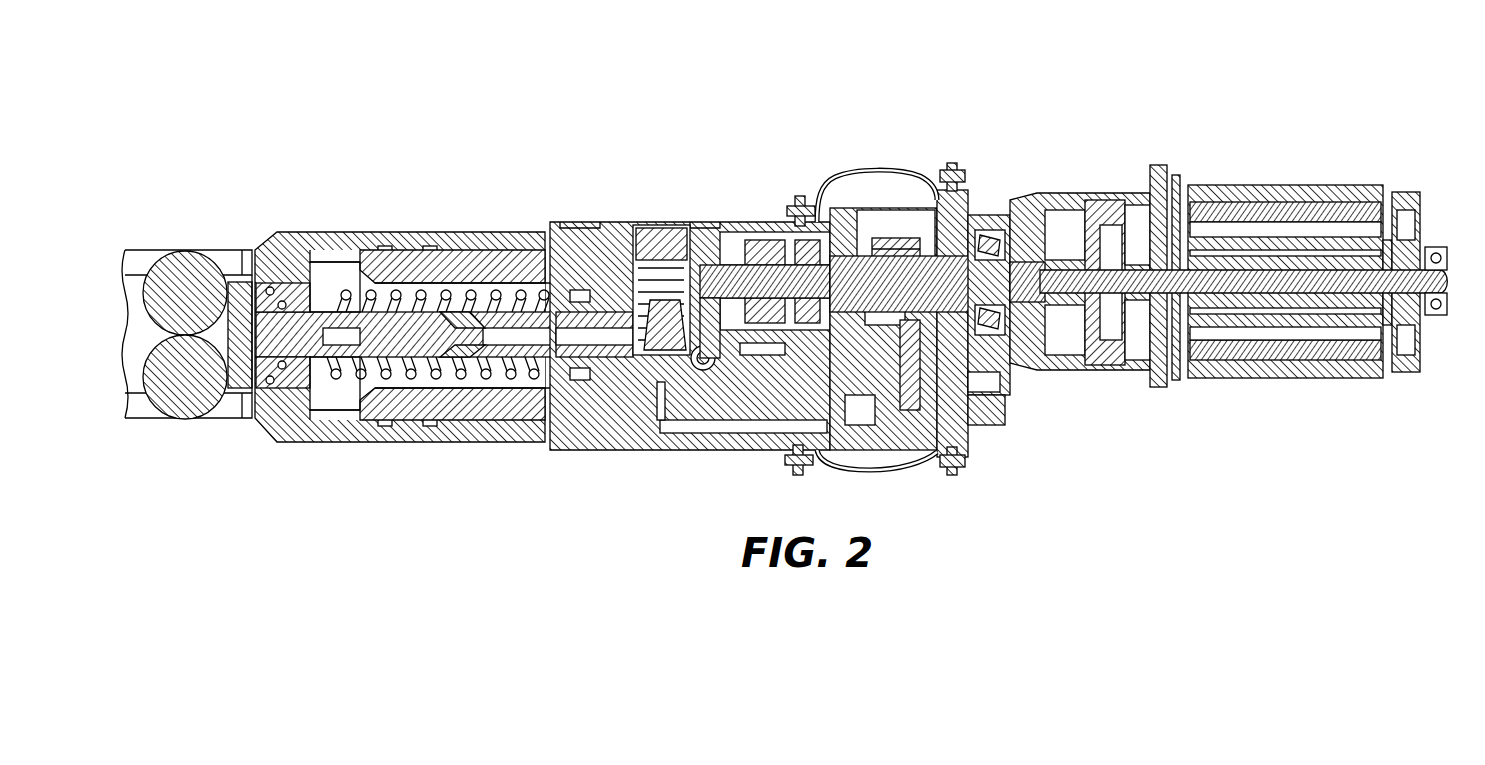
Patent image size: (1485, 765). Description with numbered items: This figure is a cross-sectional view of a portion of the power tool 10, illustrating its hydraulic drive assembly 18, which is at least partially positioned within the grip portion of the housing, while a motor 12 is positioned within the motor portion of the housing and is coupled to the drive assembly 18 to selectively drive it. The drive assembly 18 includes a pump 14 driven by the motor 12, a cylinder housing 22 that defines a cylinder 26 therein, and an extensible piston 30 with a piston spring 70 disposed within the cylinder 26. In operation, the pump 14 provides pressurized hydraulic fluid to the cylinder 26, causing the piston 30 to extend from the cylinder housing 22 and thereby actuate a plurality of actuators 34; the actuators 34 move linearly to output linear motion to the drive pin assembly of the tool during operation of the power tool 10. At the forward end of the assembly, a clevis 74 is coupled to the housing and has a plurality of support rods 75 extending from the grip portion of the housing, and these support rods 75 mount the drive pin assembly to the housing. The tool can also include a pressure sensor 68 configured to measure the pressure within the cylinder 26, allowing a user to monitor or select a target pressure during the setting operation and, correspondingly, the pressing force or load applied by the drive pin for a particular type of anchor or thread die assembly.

The power tool 10 is at (835, 104).
The motor 12 is at (1279, 400).
The pump 14 is at (899, 480).
The drive assembly 18 is at (759, 402).
The cylinder housing 22 is at (596, 240).
The cylinder 26 is at (472, 386).
The piston 30 is at (415, 237).
The actuators 34 is at (192, 283).
The pressure sensor 68 is at (1005, 412).
The piston spring 70 is at (335, 390).
The clevis 74 is at (280, 420).
The support rods 75 is at (142, 257).